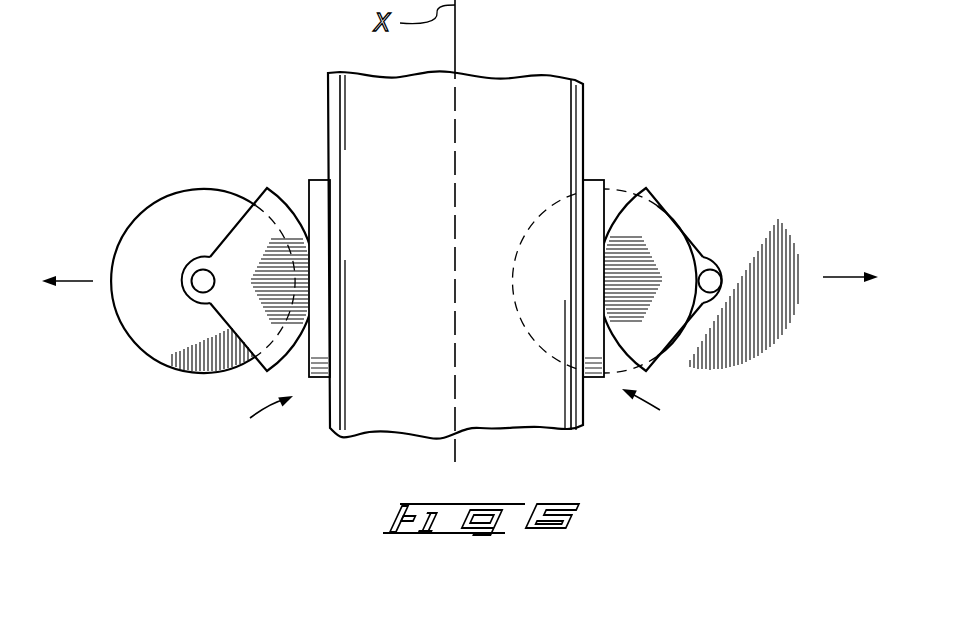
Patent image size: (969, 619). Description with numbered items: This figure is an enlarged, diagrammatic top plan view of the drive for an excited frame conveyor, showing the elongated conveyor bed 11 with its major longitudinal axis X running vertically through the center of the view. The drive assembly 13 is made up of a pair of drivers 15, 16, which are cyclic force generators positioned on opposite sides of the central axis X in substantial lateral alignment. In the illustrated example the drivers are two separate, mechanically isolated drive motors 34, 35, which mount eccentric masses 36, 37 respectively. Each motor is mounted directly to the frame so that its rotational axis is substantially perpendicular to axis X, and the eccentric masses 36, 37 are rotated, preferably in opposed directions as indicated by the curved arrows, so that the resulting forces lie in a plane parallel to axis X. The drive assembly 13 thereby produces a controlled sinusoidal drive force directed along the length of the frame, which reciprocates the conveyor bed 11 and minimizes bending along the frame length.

The conveyor bed 11 is at (596, 125).
The drive assembly 13 is at (205, 384).
The driver 15 is at (771, 328).
The driver 16 is at (144, 332).
The drive motor 34 is at (770, 226).
The drive motor 35 is at (141, 213).
The eccentric mass 36 is at (663, 236).
The eccentric mass 37 is at (241, 248).